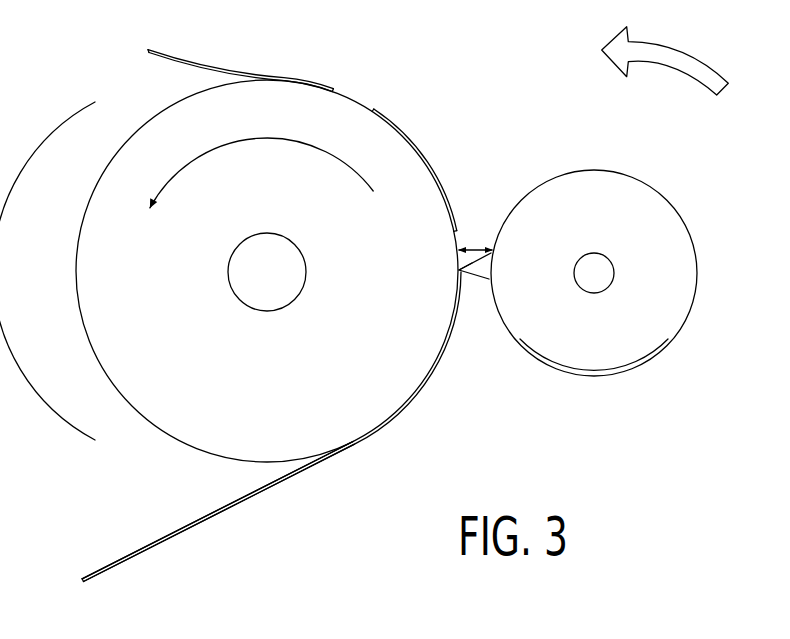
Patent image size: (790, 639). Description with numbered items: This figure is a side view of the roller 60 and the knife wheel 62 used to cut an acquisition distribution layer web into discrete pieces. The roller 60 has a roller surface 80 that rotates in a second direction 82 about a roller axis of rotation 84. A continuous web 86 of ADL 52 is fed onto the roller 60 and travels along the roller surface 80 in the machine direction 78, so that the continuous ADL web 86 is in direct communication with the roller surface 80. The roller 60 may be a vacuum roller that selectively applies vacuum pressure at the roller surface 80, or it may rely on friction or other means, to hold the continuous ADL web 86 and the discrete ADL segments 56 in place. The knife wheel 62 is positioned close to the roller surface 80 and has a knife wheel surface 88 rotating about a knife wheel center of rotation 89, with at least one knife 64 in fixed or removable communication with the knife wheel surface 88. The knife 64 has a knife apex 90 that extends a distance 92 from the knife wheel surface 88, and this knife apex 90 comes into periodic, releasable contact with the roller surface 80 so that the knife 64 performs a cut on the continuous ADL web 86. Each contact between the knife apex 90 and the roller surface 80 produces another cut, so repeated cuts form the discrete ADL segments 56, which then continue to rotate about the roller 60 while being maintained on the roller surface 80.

The ADL 52 is at (229, 527).
The discrete ADL segments 56 is at (378, 111).
The roller 60 is at (256, 366).
The knife wheel 62 is at (584, 339).
The knife 64 is at (485, 282).
The machine direction 78 is at (677, 48).
The roller surface 80 is at (91, 194).
The second direction 82 is at (202, 153).
The roller axis of rotation 84 is at (256, 274).
The continuous web of ADL 86 is at (284, 483).
The knife wheel surface 88 is at (592, 377).
The knife wheel center of rotation 89 is at (593, 268).
The knife apex 90 is at (461, 276).
The distance 92 is at (471, 245).